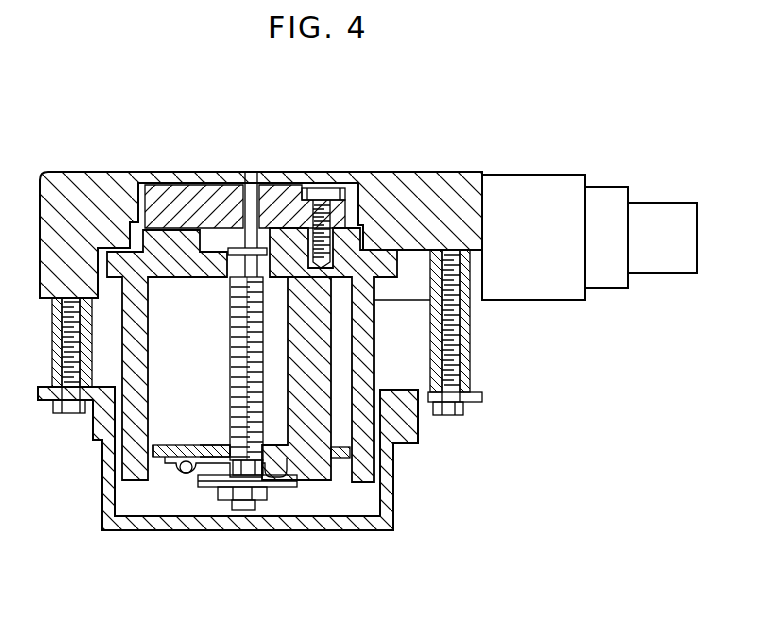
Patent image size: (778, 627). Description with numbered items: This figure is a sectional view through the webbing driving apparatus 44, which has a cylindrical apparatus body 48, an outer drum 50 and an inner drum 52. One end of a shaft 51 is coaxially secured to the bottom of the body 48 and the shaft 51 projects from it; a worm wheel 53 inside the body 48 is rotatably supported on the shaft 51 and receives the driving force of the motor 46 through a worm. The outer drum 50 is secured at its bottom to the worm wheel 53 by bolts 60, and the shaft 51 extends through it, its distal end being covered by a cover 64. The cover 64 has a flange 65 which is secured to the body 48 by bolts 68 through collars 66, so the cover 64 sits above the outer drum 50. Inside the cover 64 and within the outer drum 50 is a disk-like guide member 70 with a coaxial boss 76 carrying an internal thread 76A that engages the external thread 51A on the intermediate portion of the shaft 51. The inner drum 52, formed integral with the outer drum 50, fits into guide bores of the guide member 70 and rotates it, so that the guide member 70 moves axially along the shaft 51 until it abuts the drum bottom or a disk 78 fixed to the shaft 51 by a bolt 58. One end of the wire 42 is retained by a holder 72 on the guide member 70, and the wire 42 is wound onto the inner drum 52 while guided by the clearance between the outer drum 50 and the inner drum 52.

The wire 42 is at (183, 446).
The webbing driving apparatus 44 is at (487, 447).
The motor 46 is at (553, 298).
The apparatus body 48 is at (87, 178).
The outer drum 50 is at (372, 330).
The shaft 51 is at (248, 188).
The external thread 51A is at (232, 293).
The inner drum 52 is at (320, 477).
The worm wheel 53 is at (175, 195).
The bolt 58 is at (232, 498).
The bolts 60 is at (325, 190).
The cover 64 is at (302, 530).
The flange 65 is at (482, 398).
The collars 66 is at (52, 344).
The bolts 68 is at (70, 414).
The guide member 70 is at (210, 446).
The holder 72 is at (153, 443).
The boss 76 is at (278, 480).
The internal thread 76A is at (232, 462).
The disk 78 is at (197, 485).